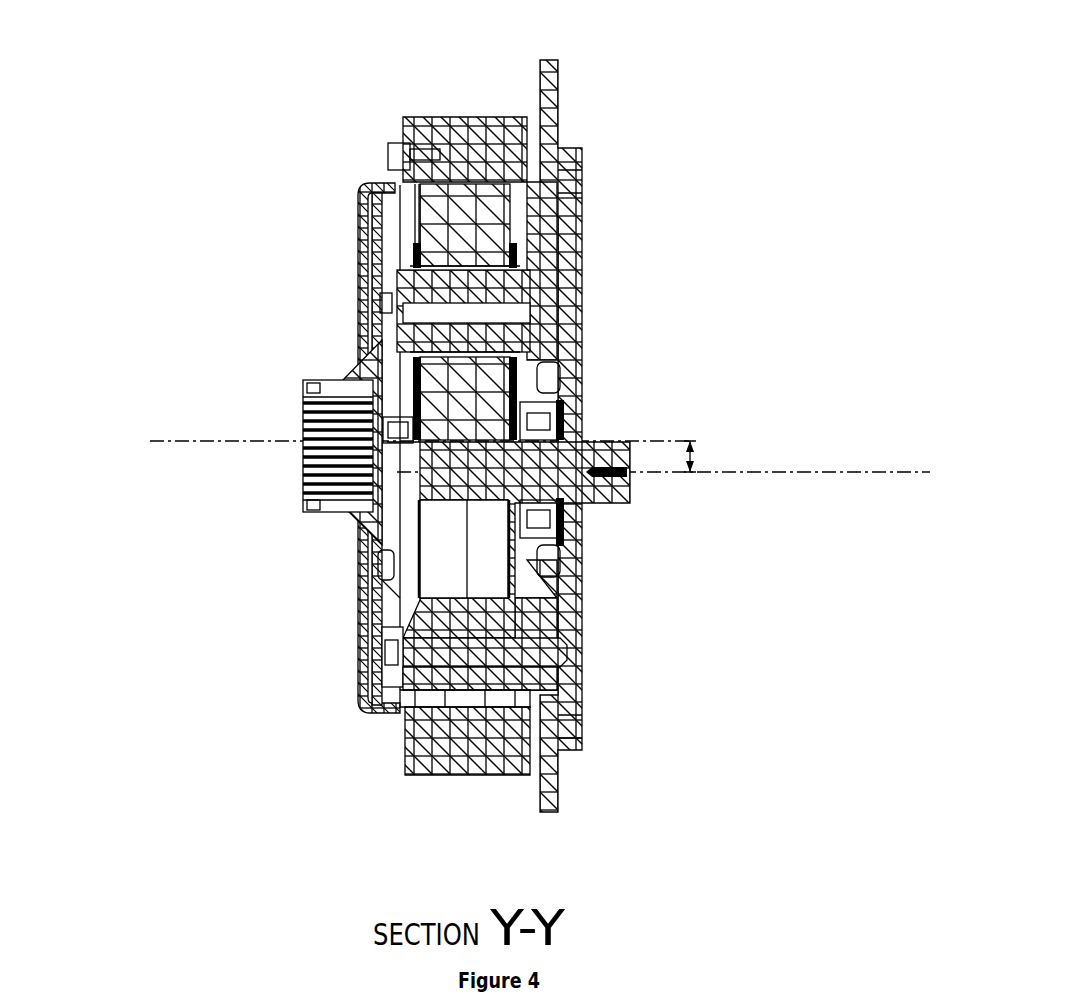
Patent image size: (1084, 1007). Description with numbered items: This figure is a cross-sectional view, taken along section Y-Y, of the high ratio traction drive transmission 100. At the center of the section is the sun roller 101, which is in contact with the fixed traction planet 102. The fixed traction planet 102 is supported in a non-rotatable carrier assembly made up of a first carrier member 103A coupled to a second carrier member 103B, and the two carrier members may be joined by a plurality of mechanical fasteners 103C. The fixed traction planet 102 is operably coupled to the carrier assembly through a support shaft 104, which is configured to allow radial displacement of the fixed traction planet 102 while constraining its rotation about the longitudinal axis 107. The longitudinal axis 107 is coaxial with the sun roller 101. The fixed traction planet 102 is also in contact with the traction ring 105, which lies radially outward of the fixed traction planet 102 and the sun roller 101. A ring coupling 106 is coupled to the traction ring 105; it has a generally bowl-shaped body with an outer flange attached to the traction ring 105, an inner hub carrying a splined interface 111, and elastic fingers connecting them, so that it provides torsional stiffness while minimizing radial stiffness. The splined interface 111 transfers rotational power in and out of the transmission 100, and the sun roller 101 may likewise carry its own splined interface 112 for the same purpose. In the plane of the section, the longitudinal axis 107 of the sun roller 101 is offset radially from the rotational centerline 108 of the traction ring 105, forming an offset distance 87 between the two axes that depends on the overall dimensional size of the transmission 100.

The high ratio traction drive transmission 100 is at (347, 100).
The sun roller 101 is at (483, 500).
The fixed traction planet 102 is at (403, 186).
The first carrier member 103A is at (560, 113).
The second carrier member 103B is at (398, 610).
The mechanical fasteners 103C is at (383, 638).
The support shaft 104 is at (530, 275).
The traction ring 105 is at (473, 778).
The ring coupling 106 is at (358, 253).
The longitudinal axis 107 is at (868, 466).
The rotational centerline 108 is at (190, 441).
The splined interface 111 is at (303, 463).
The splined interface 112 is at (630, 503).
The offset distance 87 is at (690, 457).